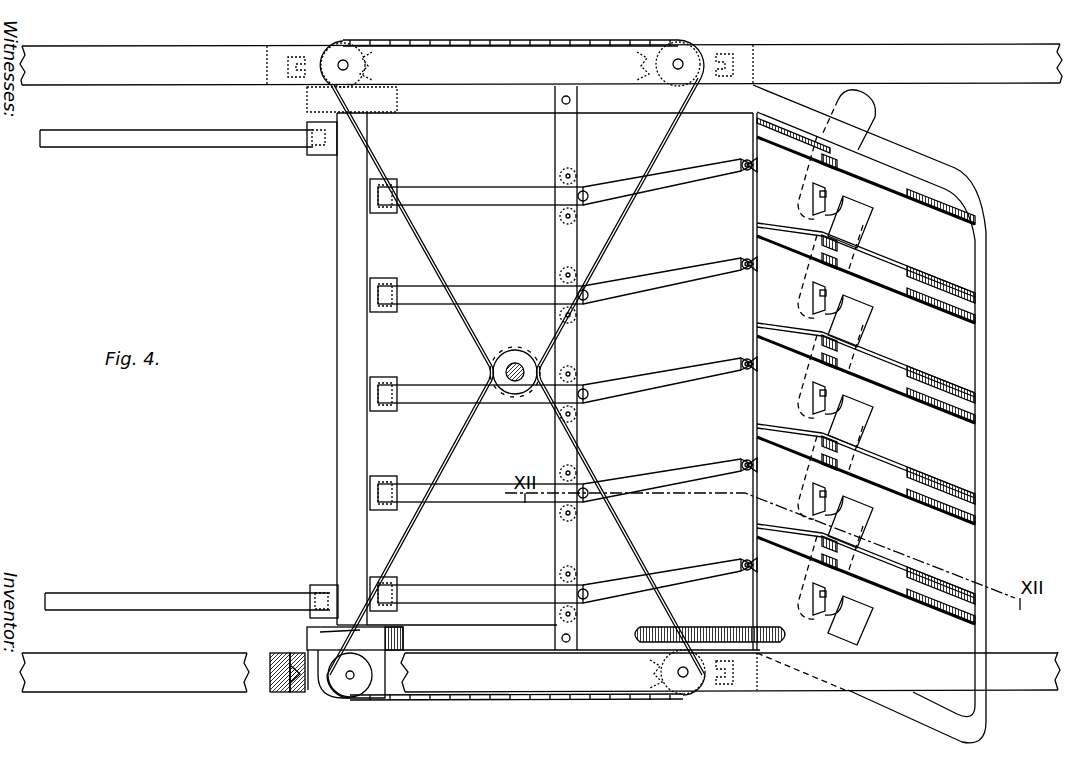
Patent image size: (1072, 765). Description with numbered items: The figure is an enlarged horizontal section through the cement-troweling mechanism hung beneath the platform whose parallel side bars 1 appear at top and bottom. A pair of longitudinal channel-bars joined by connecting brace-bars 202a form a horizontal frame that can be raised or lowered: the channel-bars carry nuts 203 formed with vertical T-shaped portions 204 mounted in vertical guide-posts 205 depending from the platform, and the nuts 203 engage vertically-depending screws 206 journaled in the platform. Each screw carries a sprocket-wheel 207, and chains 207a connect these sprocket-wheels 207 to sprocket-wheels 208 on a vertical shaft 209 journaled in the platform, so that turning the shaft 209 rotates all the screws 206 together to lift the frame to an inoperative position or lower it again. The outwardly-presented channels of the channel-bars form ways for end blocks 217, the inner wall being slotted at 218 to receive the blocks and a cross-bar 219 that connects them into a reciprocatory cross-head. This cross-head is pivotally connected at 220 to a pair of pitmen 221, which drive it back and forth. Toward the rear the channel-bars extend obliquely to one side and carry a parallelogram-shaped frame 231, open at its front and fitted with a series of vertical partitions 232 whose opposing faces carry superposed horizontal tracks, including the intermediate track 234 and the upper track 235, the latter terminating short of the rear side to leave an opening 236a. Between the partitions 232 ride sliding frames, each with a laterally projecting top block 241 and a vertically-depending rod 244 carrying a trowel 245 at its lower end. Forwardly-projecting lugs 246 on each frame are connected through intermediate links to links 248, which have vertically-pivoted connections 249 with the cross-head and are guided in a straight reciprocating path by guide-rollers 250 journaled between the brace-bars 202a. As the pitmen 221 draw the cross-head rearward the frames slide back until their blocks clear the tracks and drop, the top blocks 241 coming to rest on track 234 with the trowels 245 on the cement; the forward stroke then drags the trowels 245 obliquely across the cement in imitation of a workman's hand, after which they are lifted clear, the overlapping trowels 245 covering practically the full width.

The side bars 1 is at (541, 368).
The brace-bars 202a is at (555, 142).
The nuts 203 is at (372, 60).
The T-shaped portions 204 is at (297, 55).
The guide-posts 205 is at (753, 68).
The screws 206 is at (343, 60).
The sprocket-wheels 207 is at (372, 68).
The chains 207a is at (478, 380).
The sprocket-wheels 208 is at (520, 350).
The vertical shaft 209 is at (515, 382).
The end blocks 217 is at (307, 105).
The slot 218 is at (640, 627).
The cross-bar 219 is at (337, 350).
The pivotal connection 220 is at (315, 155).
The pitmen 221 is at (132, 147).
The parallelogram-shaped frame 231 is at (986, 362).
The vertical partitions 232 is at (748, 210).
The track 234 is at (946, 226).
The track 235 is at (882, 262).
The opening 236a is at (915, 240).
The top block 241 is at (768, 366).
The rod 244 is at (812, 292).
The trowel 245 is at (848, 236).
The lugs 246 is at (748, 338).
The links 248 is at (495, 287).
The vertically-pivoted connections 249 is at (385, 283).
The guide-rollers 250 is at (560, 175).